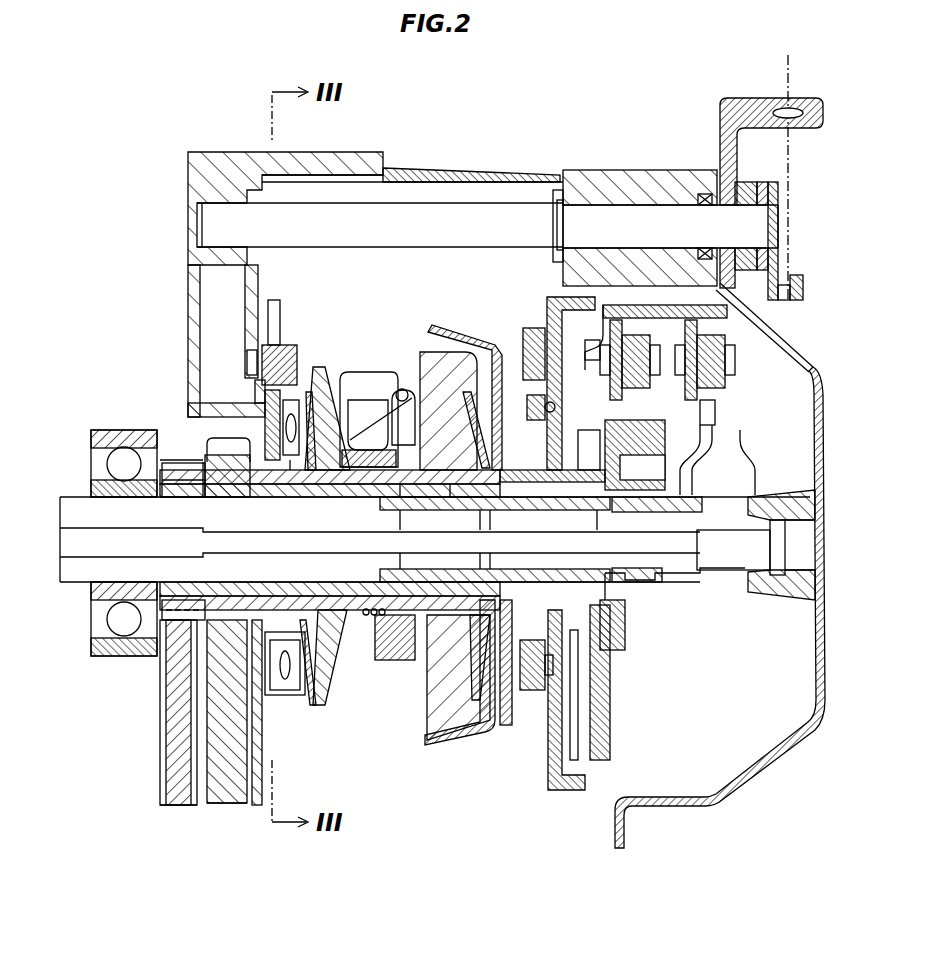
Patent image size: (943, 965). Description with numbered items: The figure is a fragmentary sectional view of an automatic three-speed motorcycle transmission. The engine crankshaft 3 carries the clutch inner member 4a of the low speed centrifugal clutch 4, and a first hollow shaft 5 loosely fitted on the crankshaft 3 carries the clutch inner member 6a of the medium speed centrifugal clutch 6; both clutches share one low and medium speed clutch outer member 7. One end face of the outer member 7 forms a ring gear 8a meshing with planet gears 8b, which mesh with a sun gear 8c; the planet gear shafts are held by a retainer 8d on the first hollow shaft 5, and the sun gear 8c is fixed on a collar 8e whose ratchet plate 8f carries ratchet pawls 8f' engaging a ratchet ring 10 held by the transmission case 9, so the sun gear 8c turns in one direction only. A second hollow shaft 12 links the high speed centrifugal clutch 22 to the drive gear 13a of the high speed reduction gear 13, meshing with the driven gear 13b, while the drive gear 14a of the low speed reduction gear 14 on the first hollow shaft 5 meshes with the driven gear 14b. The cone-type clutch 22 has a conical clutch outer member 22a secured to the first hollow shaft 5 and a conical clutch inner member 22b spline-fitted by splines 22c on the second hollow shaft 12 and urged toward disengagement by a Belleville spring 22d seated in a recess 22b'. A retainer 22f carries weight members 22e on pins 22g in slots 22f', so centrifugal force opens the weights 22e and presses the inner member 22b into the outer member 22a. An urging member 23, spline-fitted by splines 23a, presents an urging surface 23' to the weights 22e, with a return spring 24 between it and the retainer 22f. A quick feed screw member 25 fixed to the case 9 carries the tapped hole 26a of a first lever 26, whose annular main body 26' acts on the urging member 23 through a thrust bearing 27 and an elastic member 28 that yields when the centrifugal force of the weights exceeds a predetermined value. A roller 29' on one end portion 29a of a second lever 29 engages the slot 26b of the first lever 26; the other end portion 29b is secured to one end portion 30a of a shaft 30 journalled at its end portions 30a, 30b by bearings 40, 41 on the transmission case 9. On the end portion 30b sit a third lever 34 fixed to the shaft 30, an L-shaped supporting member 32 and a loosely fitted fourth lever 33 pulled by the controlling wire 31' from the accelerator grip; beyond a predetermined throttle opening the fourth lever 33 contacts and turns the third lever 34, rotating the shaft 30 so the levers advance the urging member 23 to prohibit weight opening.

The crankshaft 3 is at (80, 495).
The centrifugal clutch for first or low speed 4 is at (707, 578).
The clutch inner member 4a is at (725, 440).
The first hollow shaft 5 is at (540, 497).
The centrifugal clutch for second or medium speed 6 is at (643, 580).
The clutch inner member 6a is at (632, 440).
The low and medium speed clutch outer member 7 is at (630, 300).
The ring gear 8a is at (590, 360).
The planet gears 8b is at (580, 760).
The sun gear 8c is at (582, 440).
The retainer 8d is at (620, 650).
The collar 8e is at (540, 470).
The ratchet plate 8f is at (547, 703).
The ratchet pawls 8f' is at (534, 693).
The transmission case 9 is at (192, 333).
The ratchet ring 10 is at (525, 360).
The second hollow shaft 12 is at (362, 497).
The reduction gear for high speed 13 is at (232, 852).
The drive gear 13a is at (220, 440).
The driven gear for high speed 13b is at (240, 808).
The reduction gear for low speed 14 is at (178, 852).
The drive gear 14a is at (195, 470).
The driven gear for low speed 14b is at (175, 808).
The high speed centrifugal clutch 22 is at (452, 340).
The clutch outer member 22a is at (488, 345).
The clutch inner member 22b is at (445, 368).
The recess 22b' is at (466, 628).
The splines 22c is at (408, 497).
The Belleville spring 22d is at (458, 497).
The weight members 22e is at (345, 375).
The retainer 22f is at (366, 359).
The slots 22f' is at (382, 384).
The pins 22g is at (403, 388).
The urging member 23 is at (290, 496).
The splines 23a is at (340, 497).
The urging surface 23' is at (345, 658).
The return spring 24 is at (372, 608).
The quick feed screw member 25 is at (270, 497).
The first lever 26 is at (249, 412).
The tapped central through hole 26a is at (232, 497).
The slot 26b is at (282, 345).
The annular main body 26' is at (328, 397).
The thrust bearing 27 is at (288, 692).
The elastic member 28 is at (312, 710).
The second lever 29 is at (229, 321).
The one end portion of second lever 29a is at (252, 352).
The other end portion of second lever 29b is at (252, 165).
The roller 29' is at (327, 369).
The shaft 30 is at (470, 215).
The one end portion of shaft 30a is at (205, 230).
The other end portion of shaft 30b is at (760, 225).
The controlling wire 31' is at (803, 225).
The supporting member 32 is at (808, 105).
The fourth lever 33 is at (800, 285).
The third lever 34 is at (760, 192).
The bearing 40 is at (200, 192).
The bearing 41 is at (640, 190).